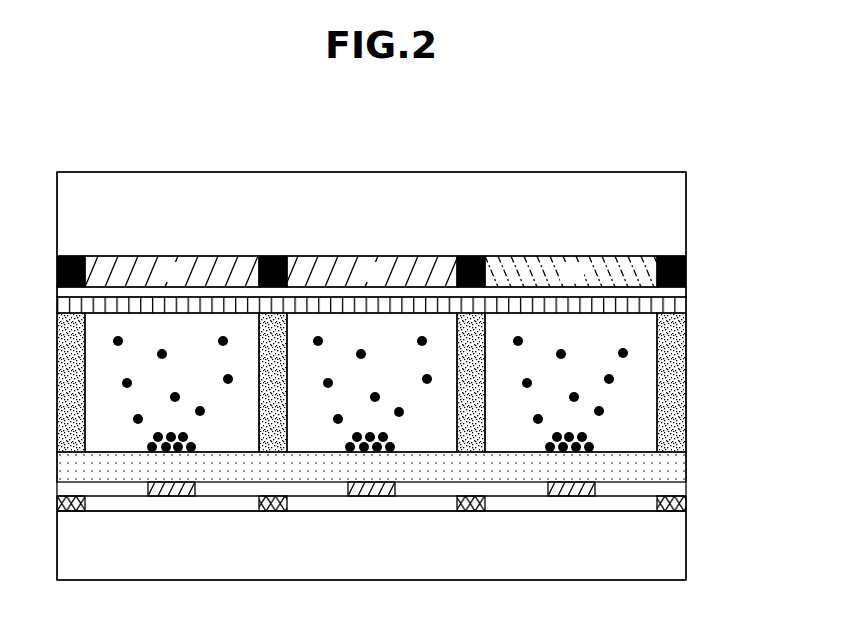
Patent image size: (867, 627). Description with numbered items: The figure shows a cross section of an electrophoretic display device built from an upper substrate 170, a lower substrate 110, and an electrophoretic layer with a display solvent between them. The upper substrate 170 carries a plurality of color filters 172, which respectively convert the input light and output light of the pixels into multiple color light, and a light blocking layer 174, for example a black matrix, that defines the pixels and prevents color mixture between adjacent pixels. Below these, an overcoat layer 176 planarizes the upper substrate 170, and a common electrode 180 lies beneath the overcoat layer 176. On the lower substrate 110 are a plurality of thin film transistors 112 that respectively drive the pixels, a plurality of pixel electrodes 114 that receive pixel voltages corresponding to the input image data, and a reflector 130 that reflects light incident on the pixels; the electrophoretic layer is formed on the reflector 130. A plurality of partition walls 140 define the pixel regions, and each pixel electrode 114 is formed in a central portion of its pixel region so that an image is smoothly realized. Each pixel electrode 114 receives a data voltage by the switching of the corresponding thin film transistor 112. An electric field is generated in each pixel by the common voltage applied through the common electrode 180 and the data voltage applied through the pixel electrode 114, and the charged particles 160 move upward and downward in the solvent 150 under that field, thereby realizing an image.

The lower substrate 110 is at (686, 547).
The thin film transistor 112 is at (685, 503).
The pixel electrode 114 is at (363, 496).
The reflector 130 is at (672, 467).
The partition wall 140 is at (686, 418).
The solvent 150 is at (638, 389).
The charged particles 160 is at (628, 353).
The upper substrate 170 is at (686, 213).
The color filter 172 is at (400, 263).
The light blocking layer 174 is at (469, 256).
The overcoat layer 176 is at (538, 292).
The common electrode 180 is at (683, 305).